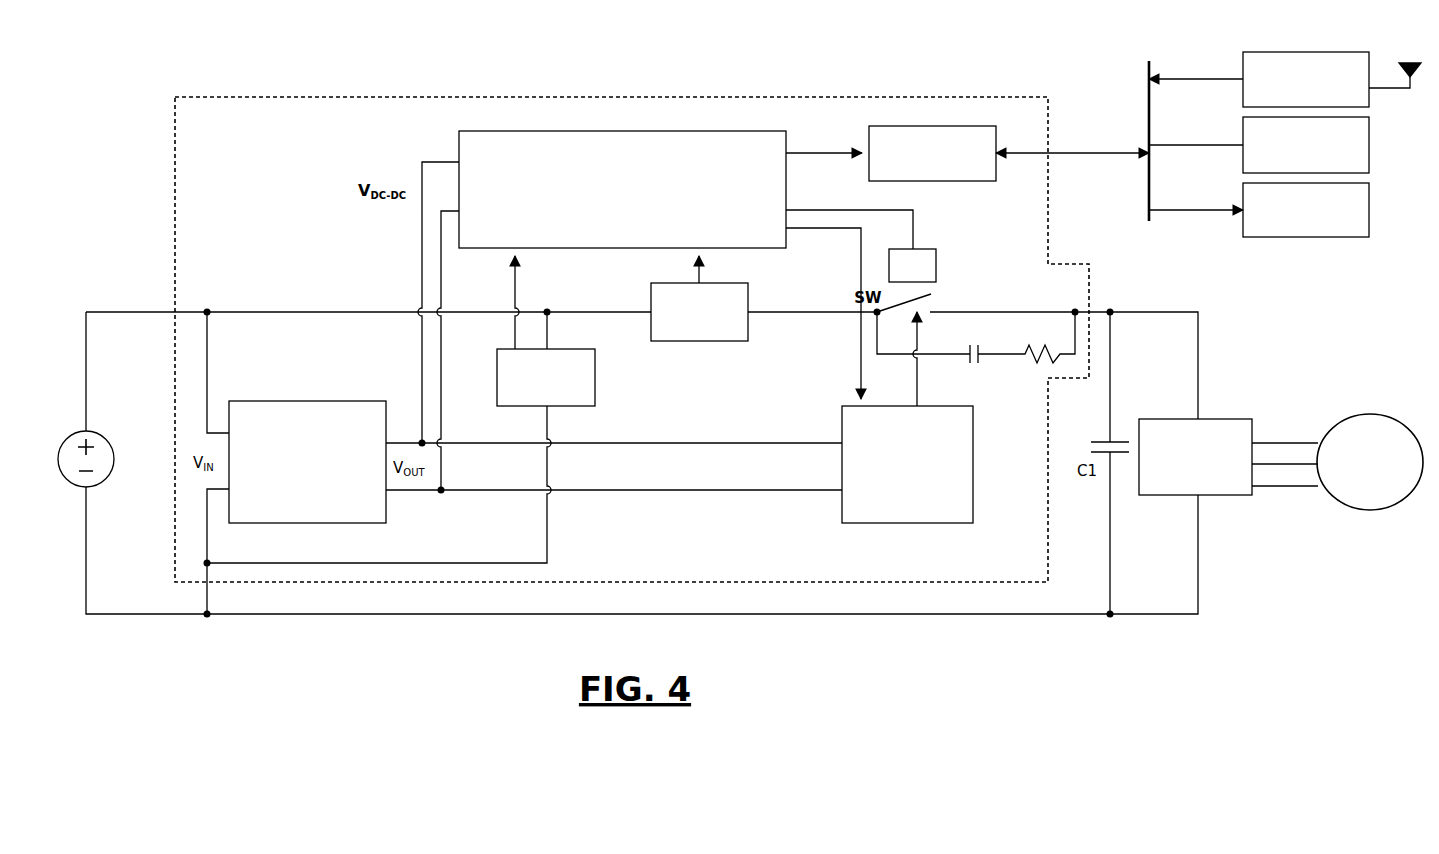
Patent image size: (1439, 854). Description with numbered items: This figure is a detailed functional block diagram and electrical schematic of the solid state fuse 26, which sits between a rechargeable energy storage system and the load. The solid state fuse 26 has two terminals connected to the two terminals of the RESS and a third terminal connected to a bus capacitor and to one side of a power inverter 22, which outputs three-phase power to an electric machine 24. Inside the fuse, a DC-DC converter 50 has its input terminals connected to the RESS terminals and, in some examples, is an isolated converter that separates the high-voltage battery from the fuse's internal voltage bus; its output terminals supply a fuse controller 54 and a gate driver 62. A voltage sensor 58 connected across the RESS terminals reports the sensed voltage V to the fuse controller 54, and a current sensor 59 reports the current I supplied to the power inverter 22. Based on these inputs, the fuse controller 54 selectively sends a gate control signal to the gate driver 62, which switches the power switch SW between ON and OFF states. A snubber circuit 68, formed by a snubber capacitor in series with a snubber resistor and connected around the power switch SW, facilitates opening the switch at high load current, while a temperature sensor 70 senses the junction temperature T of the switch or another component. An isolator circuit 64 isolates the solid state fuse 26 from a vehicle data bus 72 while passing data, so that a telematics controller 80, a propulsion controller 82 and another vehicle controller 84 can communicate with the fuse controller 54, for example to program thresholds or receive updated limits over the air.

The power inverter 22 is at (1222, 419).
The electric machine 24 is at (1370, 414).
The solid state fuse 26 is at (273, 97).
The DC-DC converter 50 is at (305, 401).
The fuse controller 54 is at (459, 143).
The voltage sensor 58 is at (595, 381).
The current sensor 59 is at (748, 298).
The gate driver 62 is at (893, 523).
The isolator circuit 64 is at (962, 181).
The snubber circuit 68 is at (993, 330).
The temperature sensor 70 is at (936, 265).
The vehicle data bus 72 is at (1149, 70).
The telematics controller 80 is at (1369, 62).
The propulsion controller 82 is at (1369, 128).
The other vehicle controller 84 is at (1369, 210).